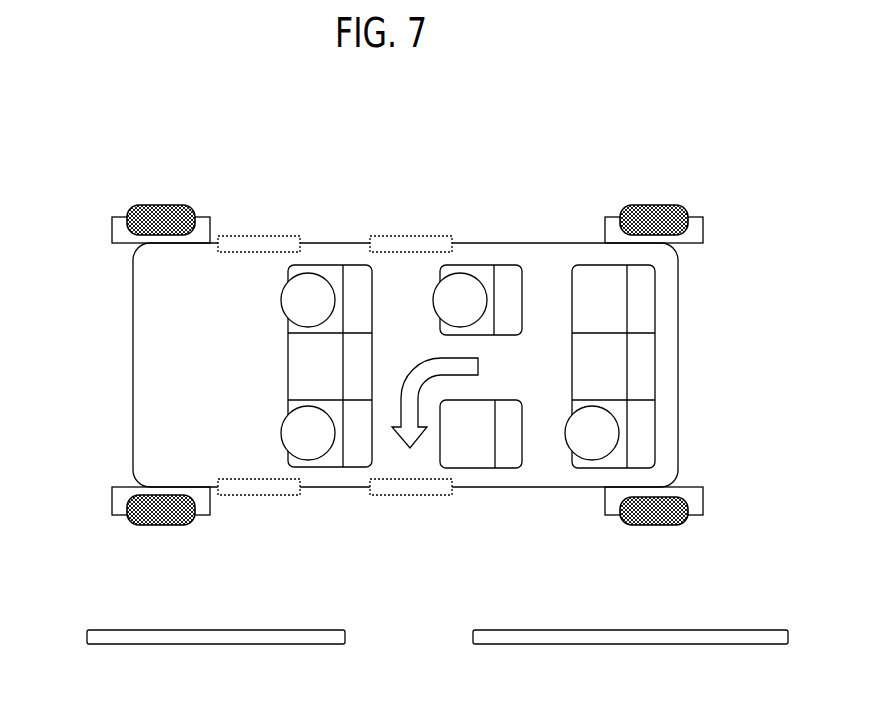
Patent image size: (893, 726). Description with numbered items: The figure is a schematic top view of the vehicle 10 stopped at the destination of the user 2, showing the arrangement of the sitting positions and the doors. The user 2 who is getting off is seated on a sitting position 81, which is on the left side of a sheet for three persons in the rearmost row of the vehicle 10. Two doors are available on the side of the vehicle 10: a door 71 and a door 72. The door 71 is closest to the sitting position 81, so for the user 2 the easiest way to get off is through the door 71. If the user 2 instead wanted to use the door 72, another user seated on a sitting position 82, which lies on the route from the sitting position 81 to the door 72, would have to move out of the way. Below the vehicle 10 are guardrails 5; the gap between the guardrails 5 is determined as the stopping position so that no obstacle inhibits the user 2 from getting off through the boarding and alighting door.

The vehicle 10 is at (133, 362).
The door 72 is at (410, 236).
The door 71 is at (410, 495).
The sitting position 82 is at (480, 265).
The sitting position 81 is at (655, 448).
The user 2 is at (620, 432).
The guardrails 5 is at (740, 630).